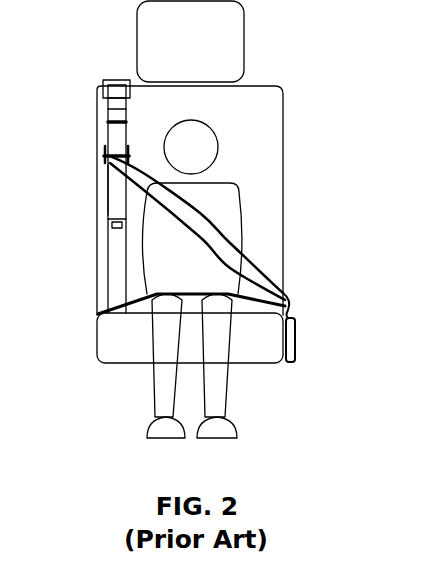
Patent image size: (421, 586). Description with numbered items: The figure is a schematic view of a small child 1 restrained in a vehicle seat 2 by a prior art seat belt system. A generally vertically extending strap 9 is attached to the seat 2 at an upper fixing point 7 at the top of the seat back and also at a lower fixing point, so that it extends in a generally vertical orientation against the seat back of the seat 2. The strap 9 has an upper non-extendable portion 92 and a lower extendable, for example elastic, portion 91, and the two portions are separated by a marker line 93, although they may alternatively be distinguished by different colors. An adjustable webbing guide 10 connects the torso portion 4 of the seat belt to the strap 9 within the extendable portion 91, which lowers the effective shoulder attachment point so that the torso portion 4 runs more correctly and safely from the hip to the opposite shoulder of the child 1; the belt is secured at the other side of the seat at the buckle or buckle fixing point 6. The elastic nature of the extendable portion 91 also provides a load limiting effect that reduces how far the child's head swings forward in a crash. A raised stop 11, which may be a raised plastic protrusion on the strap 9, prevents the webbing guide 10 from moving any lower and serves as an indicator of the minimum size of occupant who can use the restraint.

The small child 1 is at (183, 266).
The vehicle seat 2 is at (267, 140).
The torso portion 4 is at (257, 273).
The buckle or buckle fixing point 6 is at (293, 358).
The upper fixing point 7 is at (118, 80).
The generally vertically extending strap 9 is at (113, 281).
The adjustable webbing guide 10 is at (108, 157).
The raised stop 11 is at (108, 227).
The lower extendable portion 91 is at (112, 183).
The upper non-extendable portion 92 is at (112, 108).
The marker line 93 is at (114, 120).